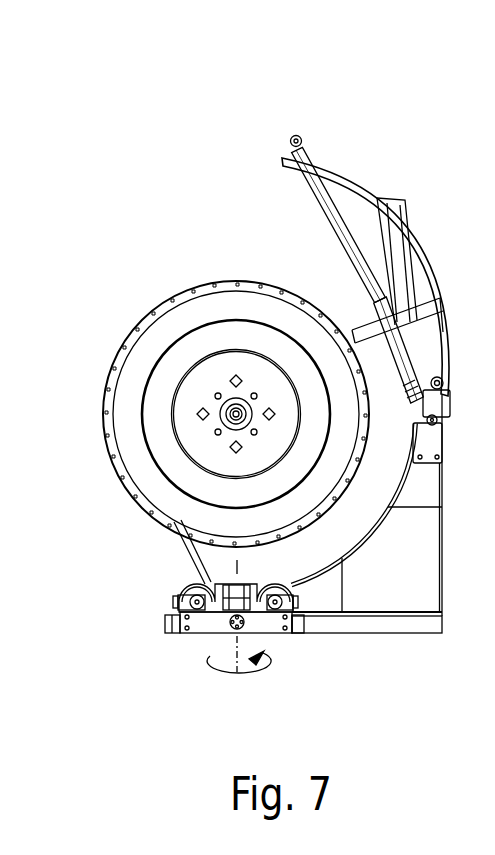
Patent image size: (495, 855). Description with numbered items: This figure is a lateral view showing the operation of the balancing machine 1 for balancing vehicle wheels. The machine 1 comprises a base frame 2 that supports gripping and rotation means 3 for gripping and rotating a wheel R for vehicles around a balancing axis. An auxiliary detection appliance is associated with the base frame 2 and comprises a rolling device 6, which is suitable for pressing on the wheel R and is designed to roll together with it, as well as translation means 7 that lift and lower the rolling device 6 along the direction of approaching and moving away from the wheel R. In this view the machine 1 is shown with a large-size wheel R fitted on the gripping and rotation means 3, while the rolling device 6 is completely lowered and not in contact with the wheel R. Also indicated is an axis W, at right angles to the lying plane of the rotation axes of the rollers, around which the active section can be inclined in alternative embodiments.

The balancing machine 1 is at (404, 152).
The wheel R is at (163, 338).
The gripping and rotation means 3 is at (242, 408).
The rolling device 6 is at (164, 575).
The translation means 7 is at (179, 650).
The base frame 2 is at (403, 624).
The axis W is at (257, 668).